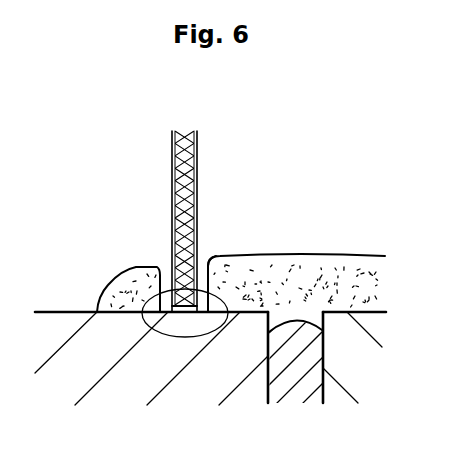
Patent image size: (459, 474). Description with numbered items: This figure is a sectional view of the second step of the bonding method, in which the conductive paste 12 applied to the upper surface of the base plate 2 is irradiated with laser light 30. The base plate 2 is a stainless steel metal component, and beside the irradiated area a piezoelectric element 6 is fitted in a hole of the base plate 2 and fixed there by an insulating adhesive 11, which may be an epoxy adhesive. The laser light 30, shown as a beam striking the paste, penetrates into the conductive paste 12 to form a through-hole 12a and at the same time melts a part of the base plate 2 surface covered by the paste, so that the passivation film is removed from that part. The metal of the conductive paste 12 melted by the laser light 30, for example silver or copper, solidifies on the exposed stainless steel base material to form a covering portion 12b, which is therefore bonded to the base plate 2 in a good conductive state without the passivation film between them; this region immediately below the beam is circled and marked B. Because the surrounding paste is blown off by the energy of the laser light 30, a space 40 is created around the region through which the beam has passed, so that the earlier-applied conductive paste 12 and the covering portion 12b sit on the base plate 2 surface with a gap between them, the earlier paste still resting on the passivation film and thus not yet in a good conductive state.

The piezoelectric element 6 is at (357, 370).
The insulating adhesive 11 is at (293, 376).
The base plate 2 is at (77, 348).
The conductive paste 12 is at (340, 250).
The through-hole 12a is at (203, 268).
The space 40 is at (208, 283).
The laser light 30 is at (207, 174).
The covering portion 12b is at (182, 316).
The region B is at (168, 274).